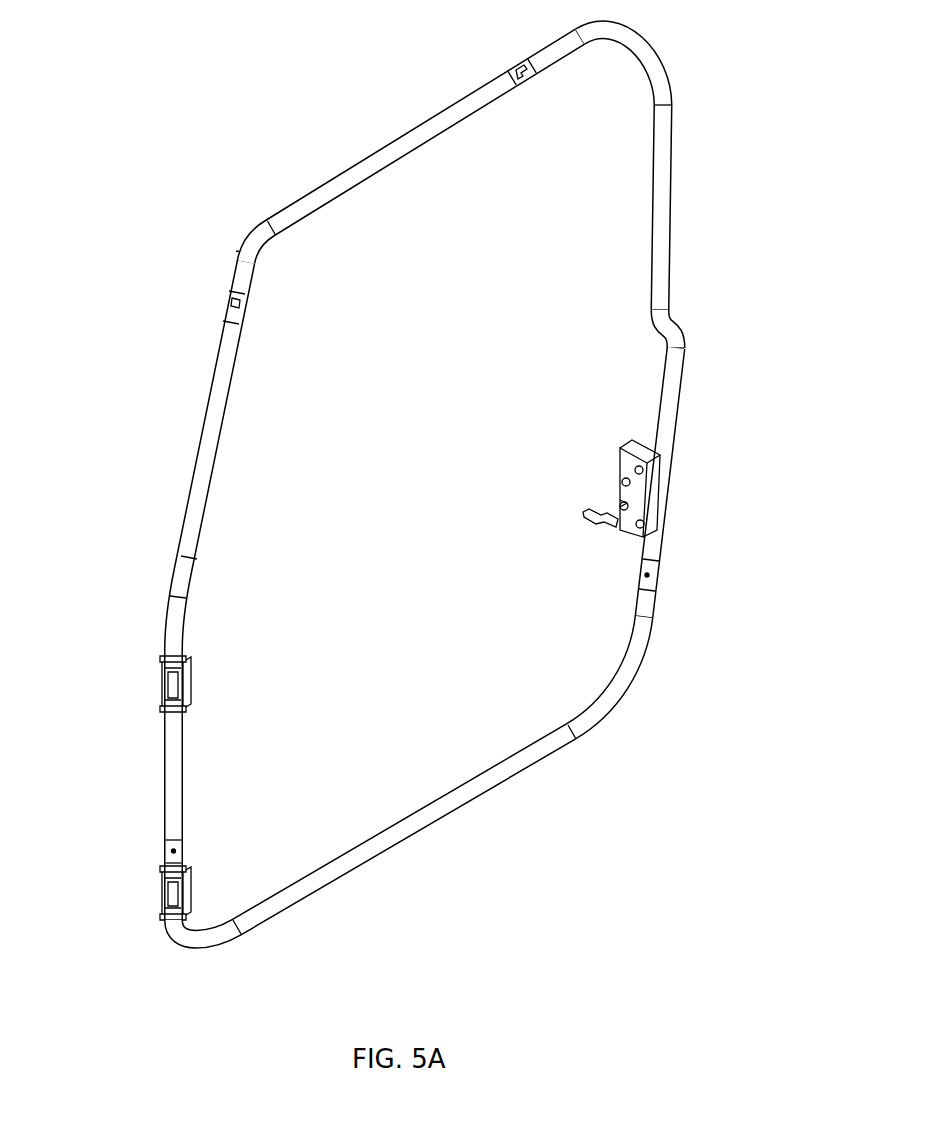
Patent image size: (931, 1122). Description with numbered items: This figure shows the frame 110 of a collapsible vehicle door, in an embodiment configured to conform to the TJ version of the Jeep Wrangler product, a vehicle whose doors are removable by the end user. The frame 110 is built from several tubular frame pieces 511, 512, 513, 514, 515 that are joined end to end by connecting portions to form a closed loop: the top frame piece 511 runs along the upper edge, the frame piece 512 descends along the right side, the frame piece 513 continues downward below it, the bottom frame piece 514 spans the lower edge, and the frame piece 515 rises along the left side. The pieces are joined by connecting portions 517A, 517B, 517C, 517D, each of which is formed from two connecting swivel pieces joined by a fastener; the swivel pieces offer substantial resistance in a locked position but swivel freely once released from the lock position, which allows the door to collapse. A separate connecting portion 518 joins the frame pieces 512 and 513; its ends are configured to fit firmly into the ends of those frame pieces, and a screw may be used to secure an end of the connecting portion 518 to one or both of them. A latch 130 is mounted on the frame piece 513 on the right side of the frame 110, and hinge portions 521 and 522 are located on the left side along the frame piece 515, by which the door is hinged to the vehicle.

The frame 110 is at (240, 128).
The latch 130 is at (615, 450).
The frame piece 511 is at (435, 125).
The frame piece 512 is at (672, 205).
The frame piece 513 is at (685, 425).
The frame piece 514 is at (477, 806).
The frame piece 515 is at (205, 588).
The connecting portion 517A is at (520, 65).
The connecting portion 517B is at (232, 308).
The connecting portion 517C is at (190, 848).
The connecting portion 517D is at (672, 592).
The connecting portion 518 is at (680, 310).
The hinge portion 521 is at (155, 695).
The hinge portion 522 is at (150, 900).